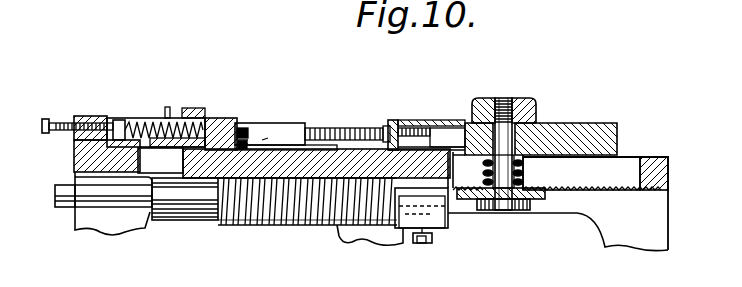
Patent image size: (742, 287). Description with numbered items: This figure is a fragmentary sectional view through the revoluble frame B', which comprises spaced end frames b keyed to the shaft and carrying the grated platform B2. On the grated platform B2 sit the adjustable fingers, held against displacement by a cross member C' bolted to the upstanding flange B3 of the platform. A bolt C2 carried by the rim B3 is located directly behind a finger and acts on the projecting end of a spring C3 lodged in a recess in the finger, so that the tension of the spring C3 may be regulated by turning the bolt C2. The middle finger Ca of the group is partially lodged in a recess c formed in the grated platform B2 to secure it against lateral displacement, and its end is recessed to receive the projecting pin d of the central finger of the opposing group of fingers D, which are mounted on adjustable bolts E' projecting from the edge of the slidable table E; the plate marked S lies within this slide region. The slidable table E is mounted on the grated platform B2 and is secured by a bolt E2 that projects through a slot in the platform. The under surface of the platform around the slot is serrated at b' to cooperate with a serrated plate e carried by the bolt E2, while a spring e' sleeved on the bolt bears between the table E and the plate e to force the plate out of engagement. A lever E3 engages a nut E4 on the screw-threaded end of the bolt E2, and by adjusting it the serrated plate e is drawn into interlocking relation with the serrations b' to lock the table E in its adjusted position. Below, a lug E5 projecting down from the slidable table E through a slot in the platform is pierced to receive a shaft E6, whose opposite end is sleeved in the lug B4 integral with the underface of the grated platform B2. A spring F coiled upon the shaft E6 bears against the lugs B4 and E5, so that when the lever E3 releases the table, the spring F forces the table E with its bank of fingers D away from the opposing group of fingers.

The revoluble frame B' is at (585, 204).
The grated platform B2 is at (349, 162).
The upstanding flange B3 is at (139, 163).
The lug B4 is at (190, 210).
The bolt C2 is at (57, 123).
The spring C3 is at (143, 124).
The middle finger Ca is at (214, 118).
The cross member C' is at (243, 116).
The projecting pin d is at (241, 142).
The adjustable fingers D is at (272, 125).
The slide plate S is at (257, 135).
The recess c is at (175, 150).
The adjustable bolt E' is at (347, 119).
The slidable table E is at (426, 123).
The bolt E2 is at (507, 148).
The lever E3 is at (488, 93).
The nut E4 is at (505, 100).
The spring e' is at (485, 171).
The serrated plate e is at (501, 218).
The end frame b is at (581, 173).
The serrated surface b' is at (557, 176).
The spring F is at (256, 222).
The shaft E6 is at (292, 222).
The lug E5 is at (436, 235).